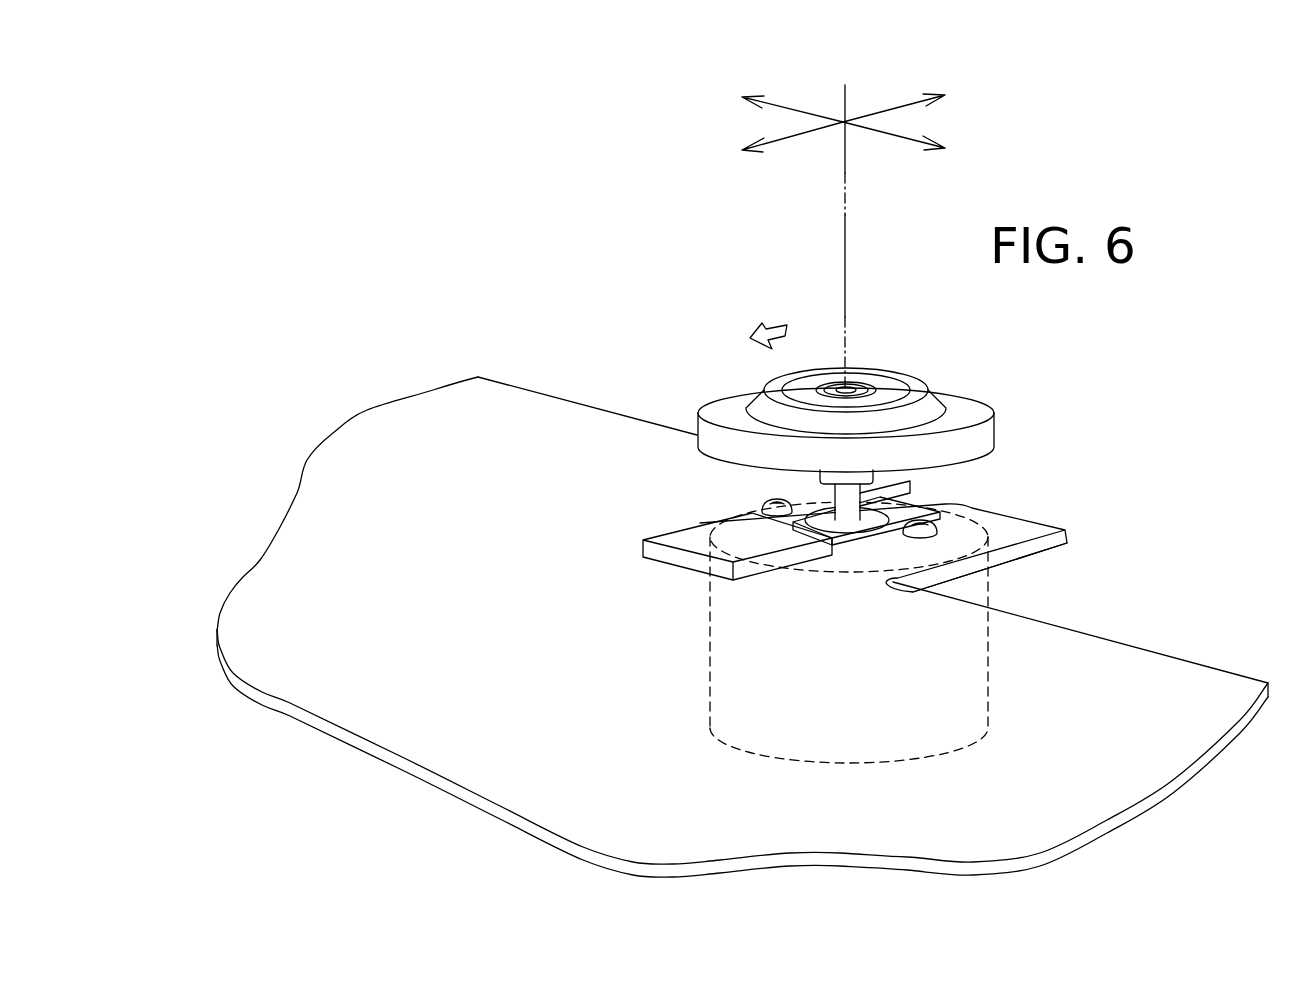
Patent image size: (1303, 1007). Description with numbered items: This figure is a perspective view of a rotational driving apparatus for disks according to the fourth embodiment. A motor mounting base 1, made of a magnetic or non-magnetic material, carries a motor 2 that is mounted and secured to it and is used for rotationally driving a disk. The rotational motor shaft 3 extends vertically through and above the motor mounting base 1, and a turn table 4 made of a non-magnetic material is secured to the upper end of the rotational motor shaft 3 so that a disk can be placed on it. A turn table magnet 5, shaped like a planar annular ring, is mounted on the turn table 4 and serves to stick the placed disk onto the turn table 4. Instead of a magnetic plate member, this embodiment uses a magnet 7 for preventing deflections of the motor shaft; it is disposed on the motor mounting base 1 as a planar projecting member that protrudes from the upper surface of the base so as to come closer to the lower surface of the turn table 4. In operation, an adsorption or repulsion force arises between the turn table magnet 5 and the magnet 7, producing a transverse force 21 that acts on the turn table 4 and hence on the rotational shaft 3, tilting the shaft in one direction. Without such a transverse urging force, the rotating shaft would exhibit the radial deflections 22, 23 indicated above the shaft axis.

The motor mounting base 1 is at (1018, 527).
The motor 2 is at (973, 587).
The rotational motor shaft 3 is at (850, 499).
The turn table 4 is at (978, 413).
The turn table magnet 5 is at (888, 388).
The magnet for preventing deflections of the motor shaft 7 is at (692, 541).
The transverse force 21 is at (788, 318).
The radial deflection 22 is at (792, 102).
The radial deflection 23 is at (911, 101).